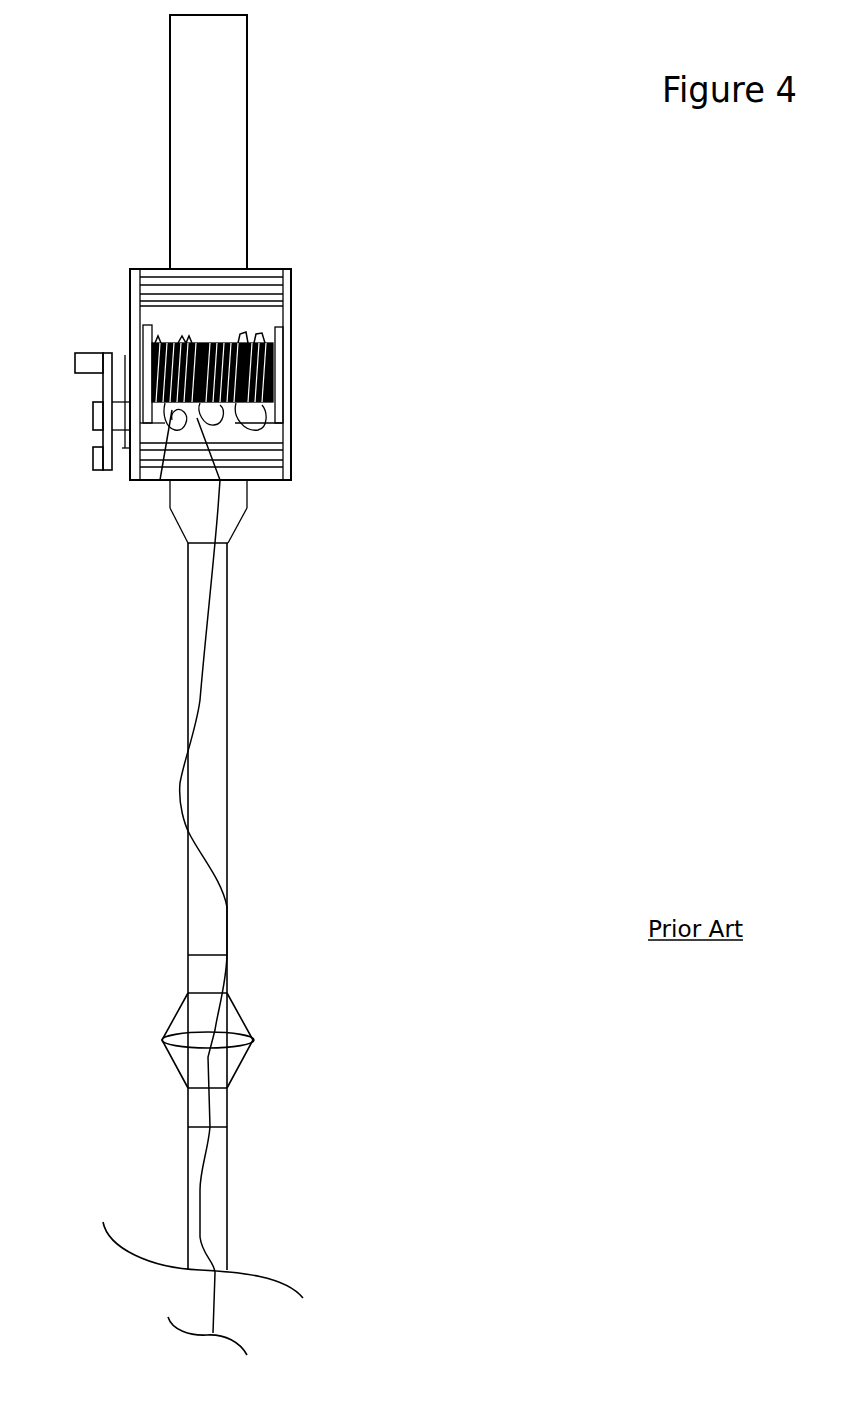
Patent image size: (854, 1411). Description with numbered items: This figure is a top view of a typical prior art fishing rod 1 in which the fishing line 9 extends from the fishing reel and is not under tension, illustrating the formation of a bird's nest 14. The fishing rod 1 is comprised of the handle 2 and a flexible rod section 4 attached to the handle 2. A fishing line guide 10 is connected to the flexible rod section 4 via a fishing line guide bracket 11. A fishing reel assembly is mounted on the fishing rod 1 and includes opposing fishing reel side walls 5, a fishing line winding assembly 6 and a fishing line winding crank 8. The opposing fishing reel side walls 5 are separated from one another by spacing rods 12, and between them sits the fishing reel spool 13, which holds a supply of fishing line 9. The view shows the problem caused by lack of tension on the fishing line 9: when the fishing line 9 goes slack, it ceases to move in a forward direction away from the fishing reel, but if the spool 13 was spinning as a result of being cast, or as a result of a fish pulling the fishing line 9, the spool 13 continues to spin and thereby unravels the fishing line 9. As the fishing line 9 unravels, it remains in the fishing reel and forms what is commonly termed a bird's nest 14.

The fishing rod 1 is at (430, 136).
The handle 2 is at (228, 108).
The flexible rod section 4 is at (227, 650).
The fishing reel side walls 5 is at (292, 355).
The fishing line winding assembly 6 is at (125, 355).
The fishing line winding crank 8 is at (93, 412).
The fishing line 9 is at (200, 344).
The fishing line guide 10 is at (253, 1043).
The fishing line guide bracket 11 is at (167, 1022).
The spacing rods 12 is at (275, 285).
The fishing reel spool 13 is at (148, 327).
The bird's nest 14 is at (160, 480).